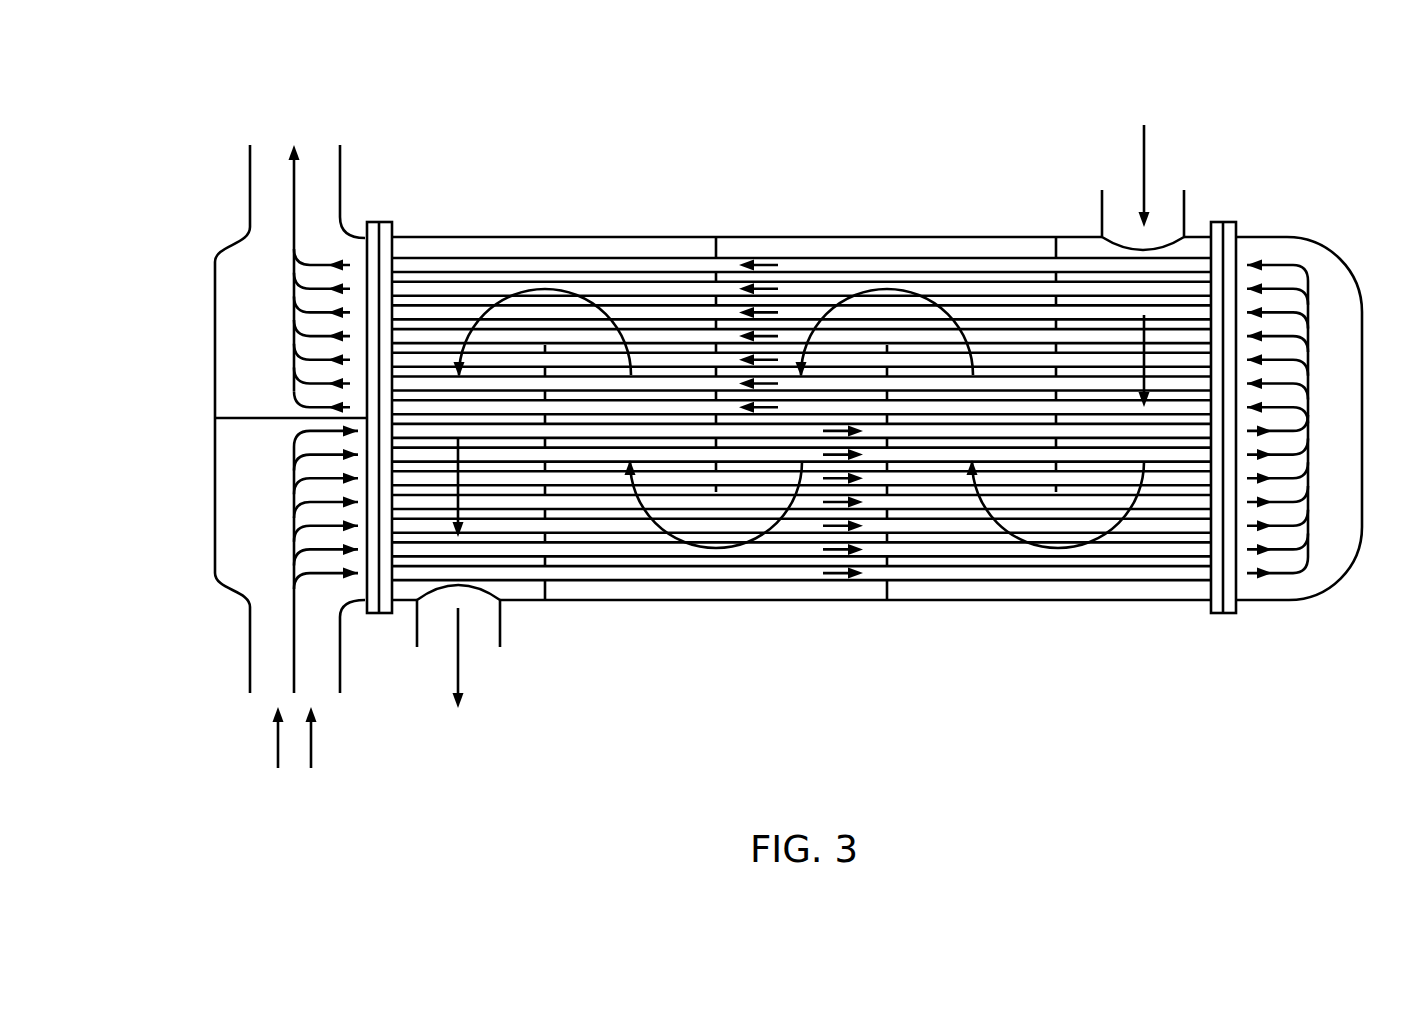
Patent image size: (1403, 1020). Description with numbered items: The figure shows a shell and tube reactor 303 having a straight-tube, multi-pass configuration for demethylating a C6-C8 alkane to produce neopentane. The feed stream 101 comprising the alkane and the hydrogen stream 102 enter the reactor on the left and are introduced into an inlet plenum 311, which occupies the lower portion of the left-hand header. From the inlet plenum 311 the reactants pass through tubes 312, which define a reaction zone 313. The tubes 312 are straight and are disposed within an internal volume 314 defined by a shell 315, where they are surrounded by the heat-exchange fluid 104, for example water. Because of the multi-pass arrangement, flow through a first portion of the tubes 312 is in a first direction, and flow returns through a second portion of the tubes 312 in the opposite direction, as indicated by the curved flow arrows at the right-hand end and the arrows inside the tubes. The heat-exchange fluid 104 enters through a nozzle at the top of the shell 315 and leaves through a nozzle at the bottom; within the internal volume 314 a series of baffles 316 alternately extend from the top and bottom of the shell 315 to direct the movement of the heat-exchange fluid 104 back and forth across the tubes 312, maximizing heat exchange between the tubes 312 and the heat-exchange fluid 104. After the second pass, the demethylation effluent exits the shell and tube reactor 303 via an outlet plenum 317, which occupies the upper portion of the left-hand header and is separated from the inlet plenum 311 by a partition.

The shell and tube reactor 303 is at (240, 94).
The feed stream 101 is at (278, 745).
The hydrogen stream 102 is at (311, 745).
The heat-exchange fluid 104 is at (1144, 150).
The inlet plenum 311 is at (240, 485).
The tubes 312 is at (643, 258).
The reaction zone 313 is at (1092, 572).
The internal volume 314 is at (656, 588).
The shell 315 is at (538, 237).
The baffles 316 is at (717, 247).
The outlet plenum 317 is at (247, 323).